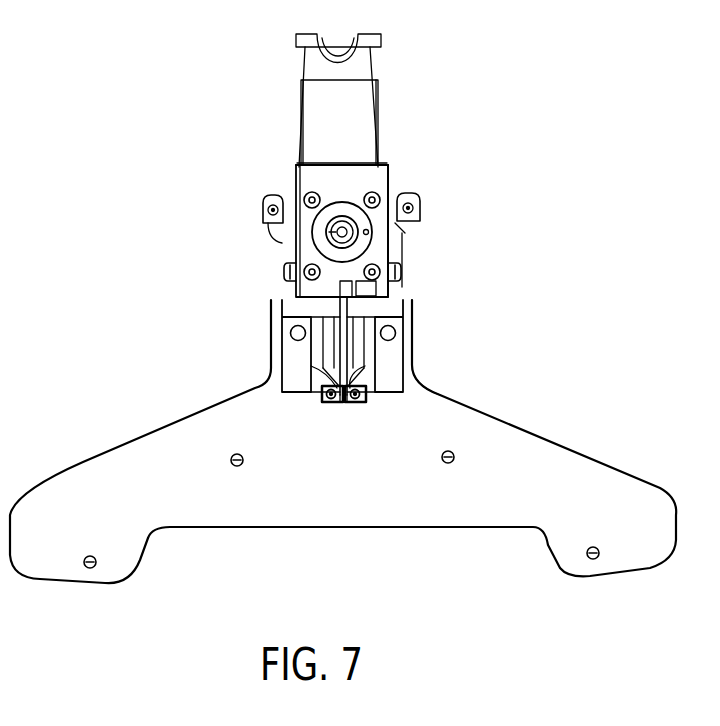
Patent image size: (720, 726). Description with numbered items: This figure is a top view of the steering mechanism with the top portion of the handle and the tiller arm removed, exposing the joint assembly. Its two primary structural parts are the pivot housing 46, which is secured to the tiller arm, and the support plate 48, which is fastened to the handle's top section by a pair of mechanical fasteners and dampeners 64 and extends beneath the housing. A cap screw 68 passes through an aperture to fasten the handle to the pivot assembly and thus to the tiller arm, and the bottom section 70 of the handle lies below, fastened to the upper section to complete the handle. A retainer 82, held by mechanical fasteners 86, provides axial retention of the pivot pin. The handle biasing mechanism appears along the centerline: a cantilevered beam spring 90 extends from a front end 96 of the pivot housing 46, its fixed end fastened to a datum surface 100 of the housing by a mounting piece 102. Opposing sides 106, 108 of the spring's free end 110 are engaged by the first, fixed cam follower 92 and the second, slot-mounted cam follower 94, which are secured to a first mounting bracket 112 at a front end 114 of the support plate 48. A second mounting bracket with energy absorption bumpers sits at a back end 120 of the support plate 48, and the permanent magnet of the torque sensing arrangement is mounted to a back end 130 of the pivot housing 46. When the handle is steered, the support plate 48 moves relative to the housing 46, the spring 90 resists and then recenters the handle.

The pivot housing 46 is at (312, 168).
The support plate 48 is at (404, 230).
The dampeners 64 is at (262, 210).
The cap screw 68 is at (335, 232).
The bottom section 70 is at (485, 510).
The retainer 82 is at (403, 262).
The mechanical fasteners 86 is at (290, 195).
The cantilevered beam spring 90 is at (330, 374).
The first cam follower 92 is at (329, 402).
The second cam follower 94 is at (357, 402).
The front end 96 is at (388, 294).
The datum surface 100 is at (328, 290).
The mounting piece 102 is at (378, 288).
The side of free end 106 is at (280, 365).
The side of free end 108 is at (413, 367).
The free end 110 is at (340, 408).
The first mounting bracket 112 is at (363, 353).
The front end 114 is at (396, 392).
The back end 120 is at (388, 68).
The back end 130 is at (374, 172).